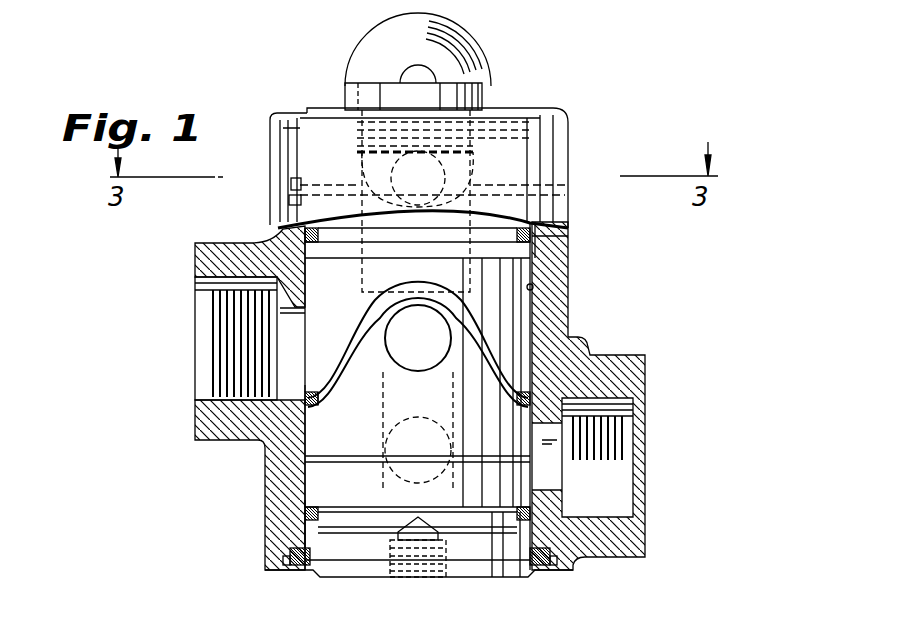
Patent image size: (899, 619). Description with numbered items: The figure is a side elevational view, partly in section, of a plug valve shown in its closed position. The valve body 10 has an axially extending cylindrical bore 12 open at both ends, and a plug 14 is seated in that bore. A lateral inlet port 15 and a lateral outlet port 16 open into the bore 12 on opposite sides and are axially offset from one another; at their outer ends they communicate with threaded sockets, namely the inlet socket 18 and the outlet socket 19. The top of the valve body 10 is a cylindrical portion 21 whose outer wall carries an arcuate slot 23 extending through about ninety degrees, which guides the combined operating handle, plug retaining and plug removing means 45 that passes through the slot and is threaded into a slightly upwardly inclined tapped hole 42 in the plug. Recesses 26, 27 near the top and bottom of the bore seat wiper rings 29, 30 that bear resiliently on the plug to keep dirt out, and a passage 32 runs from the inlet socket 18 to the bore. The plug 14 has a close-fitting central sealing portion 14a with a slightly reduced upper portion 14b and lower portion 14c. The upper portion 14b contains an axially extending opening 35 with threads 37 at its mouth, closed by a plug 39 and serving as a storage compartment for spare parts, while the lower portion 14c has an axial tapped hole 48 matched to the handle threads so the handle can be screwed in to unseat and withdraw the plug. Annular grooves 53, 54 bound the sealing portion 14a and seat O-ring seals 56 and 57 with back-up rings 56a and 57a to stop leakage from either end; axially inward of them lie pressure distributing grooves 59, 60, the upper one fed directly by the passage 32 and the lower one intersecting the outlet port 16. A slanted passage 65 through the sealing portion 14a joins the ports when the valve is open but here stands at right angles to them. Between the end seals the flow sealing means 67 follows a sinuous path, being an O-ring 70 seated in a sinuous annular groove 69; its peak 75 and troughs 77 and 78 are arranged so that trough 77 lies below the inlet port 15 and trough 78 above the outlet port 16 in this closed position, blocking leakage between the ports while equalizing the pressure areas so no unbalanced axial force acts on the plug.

The valve body 10 is at (573, 276).
The cylindrical bore 12 is at (534, 287).
The plug 14 is at (540, 316).
The sealing portion 14a is at (513, 337).
The upper portion 14b is at (325, 110).
The lower portion 14c is at (503, 560).
The inlet port 15 is at (293, 348).
The outlet port 16 is at (540, 447).
The inlet socket 18 is at (200, 318).
The outlet socket 19 is at (627, 428).
The cylindrical portion 21 is at (548, 113).
The arcuate slot 23 is at (570, 148).
The recess 26 is at (302, 185).
The recess 27 is at (292, 565).
The wiper ring 29 is at (300, 208).
The wiper ring 30 is at (305, 560).
The passage 32 is at (272, 242).
The axially extending opening 35 is at (356, 185).
The threads 37 is at (498, 110).
The plug 39 is at (362, 82).
The tapped hole 42 is at (408, 190).
The operating handle 45 is at (427, 82).
The tapped hole 48 is at (400, 577).
The annular groove 53 is at (536, 243).
The annular groove 54 is at (308, 512).
The O-ring seal 56 is at (540, 225).
The back-up ring 56a is at (523, 223).
The O-ring seal 57 is at (305, 513).
The back-up ring 57a is at (305, 520).
The pressure distributing groove 59 is at (538, 255).
The pressure distributing groove 60 is at (305, 477).
The slanted passage 65 is at (387, 398).
The flow sealing means 67 is at (358, 310).
The sinuous annular groove 69 is at (478, 363).
The O-ring 70 is at (309, 392).
The peak 75 is at (417, 278).
The trough 77 is at (312, 407).
The trough 78 is at (630, 380).